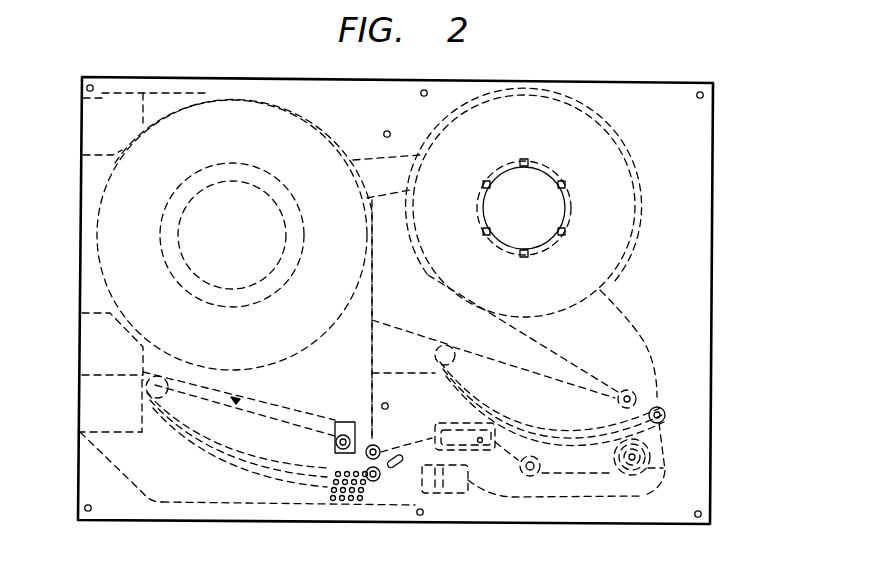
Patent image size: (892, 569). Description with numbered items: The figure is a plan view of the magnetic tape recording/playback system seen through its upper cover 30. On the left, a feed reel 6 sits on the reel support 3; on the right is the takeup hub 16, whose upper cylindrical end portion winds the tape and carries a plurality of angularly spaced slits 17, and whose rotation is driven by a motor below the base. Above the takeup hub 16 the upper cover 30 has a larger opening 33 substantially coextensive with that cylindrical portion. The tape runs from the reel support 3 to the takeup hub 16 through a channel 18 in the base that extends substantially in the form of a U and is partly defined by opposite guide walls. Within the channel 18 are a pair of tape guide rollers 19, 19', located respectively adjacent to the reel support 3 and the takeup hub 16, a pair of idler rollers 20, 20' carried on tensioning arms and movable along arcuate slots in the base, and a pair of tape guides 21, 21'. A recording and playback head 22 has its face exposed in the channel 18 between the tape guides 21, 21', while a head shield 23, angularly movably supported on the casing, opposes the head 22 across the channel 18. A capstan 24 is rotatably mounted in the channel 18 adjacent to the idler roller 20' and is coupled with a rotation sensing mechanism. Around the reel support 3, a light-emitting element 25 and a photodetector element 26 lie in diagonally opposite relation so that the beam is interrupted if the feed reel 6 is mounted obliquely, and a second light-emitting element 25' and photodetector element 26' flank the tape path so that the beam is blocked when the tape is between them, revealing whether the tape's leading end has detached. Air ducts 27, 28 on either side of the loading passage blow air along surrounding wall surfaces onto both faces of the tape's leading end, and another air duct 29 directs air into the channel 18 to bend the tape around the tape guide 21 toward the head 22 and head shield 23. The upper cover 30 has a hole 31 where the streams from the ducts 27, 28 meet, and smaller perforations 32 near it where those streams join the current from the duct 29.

The reel support 3 is at (275, 262).
The feed reel 6 is at (100, 258).
The takeup hub 16 is at (552, 246).
The slits 17 is at (528, 162).
The channel 18 is at (553, 492).
The tape guide roller 19 is at (399, 430).
The tape guide roller 19' is at (658, 387).
The idler roller 20 is at (405, 447).
The idler roller 20' is at (676, 451).
The tape guide 21 is at (411, 496).
The tape guide 21' is at (553, 459).
The recording and playback head 22 is at (470, 490).
The head shield 23 is at (463, 433).
The capstan 24 is at (648, 463).
The light-emitting element 25 is at (243, 270).
The light-emitting element 25' is at (239, 404).
The photodetector element 26 is at (237, 440).
The photodetector element 26' is at (355, 320).
The air duct 27 is at (98, 118).
The air duct 28 is at (98, 357).
The air duct 29 is at (122, 423).
The upper cover 30 is at (713, 206).
The hole 31 is at (347, 422).
The perforations 32 is at (343, 502).
The larger opening 33 is at (548, 212).